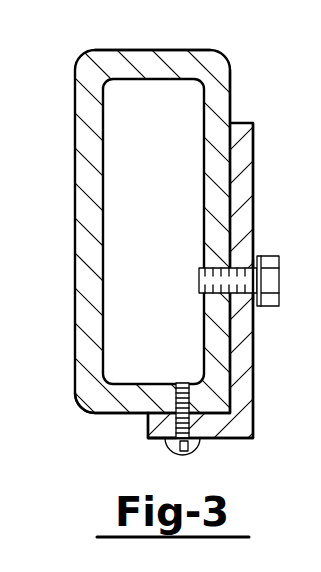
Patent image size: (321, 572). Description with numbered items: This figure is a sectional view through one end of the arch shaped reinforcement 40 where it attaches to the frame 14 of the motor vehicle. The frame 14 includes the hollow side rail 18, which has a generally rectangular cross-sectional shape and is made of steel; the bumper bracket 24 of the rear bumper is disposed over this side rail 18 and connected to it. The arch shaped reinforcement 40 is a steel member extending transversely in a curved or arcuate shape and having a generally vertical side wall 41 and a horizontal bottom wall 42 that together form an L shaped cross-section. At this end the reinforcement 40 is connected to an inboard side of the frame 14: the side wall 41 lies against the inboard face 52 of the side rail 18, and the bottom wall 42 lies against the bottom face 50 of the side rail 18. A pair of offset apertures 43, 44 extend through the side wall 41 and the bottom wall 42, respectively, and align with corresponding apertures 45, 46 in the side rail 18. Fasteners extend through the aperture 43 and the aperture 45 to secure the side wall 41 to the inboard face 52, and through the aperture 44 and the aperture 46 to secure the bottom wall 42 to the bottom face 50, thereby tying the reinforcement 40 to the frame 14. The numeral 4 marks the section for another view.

The frame 14 is at (87, 37).
The side rail 18 is at (168, 52).
The inboard face 52 is at (232, 78).
The bottom face 50 is at (106, 418).
The arch shaped reinforcement 40 is at (160, 286).
The side wall 41 is at (250, 378).
The bottom wall 42 is at (235, 420).
The aperture 44 is at (150, 418).
The aperture 43 is at (231, 286).
The aperture 45 is at (200, 288).
The bumper bracket 24 is at (289, 261).
The aperture 46 is at (182, 383).
The section line 4- 4 is at (266, 256).